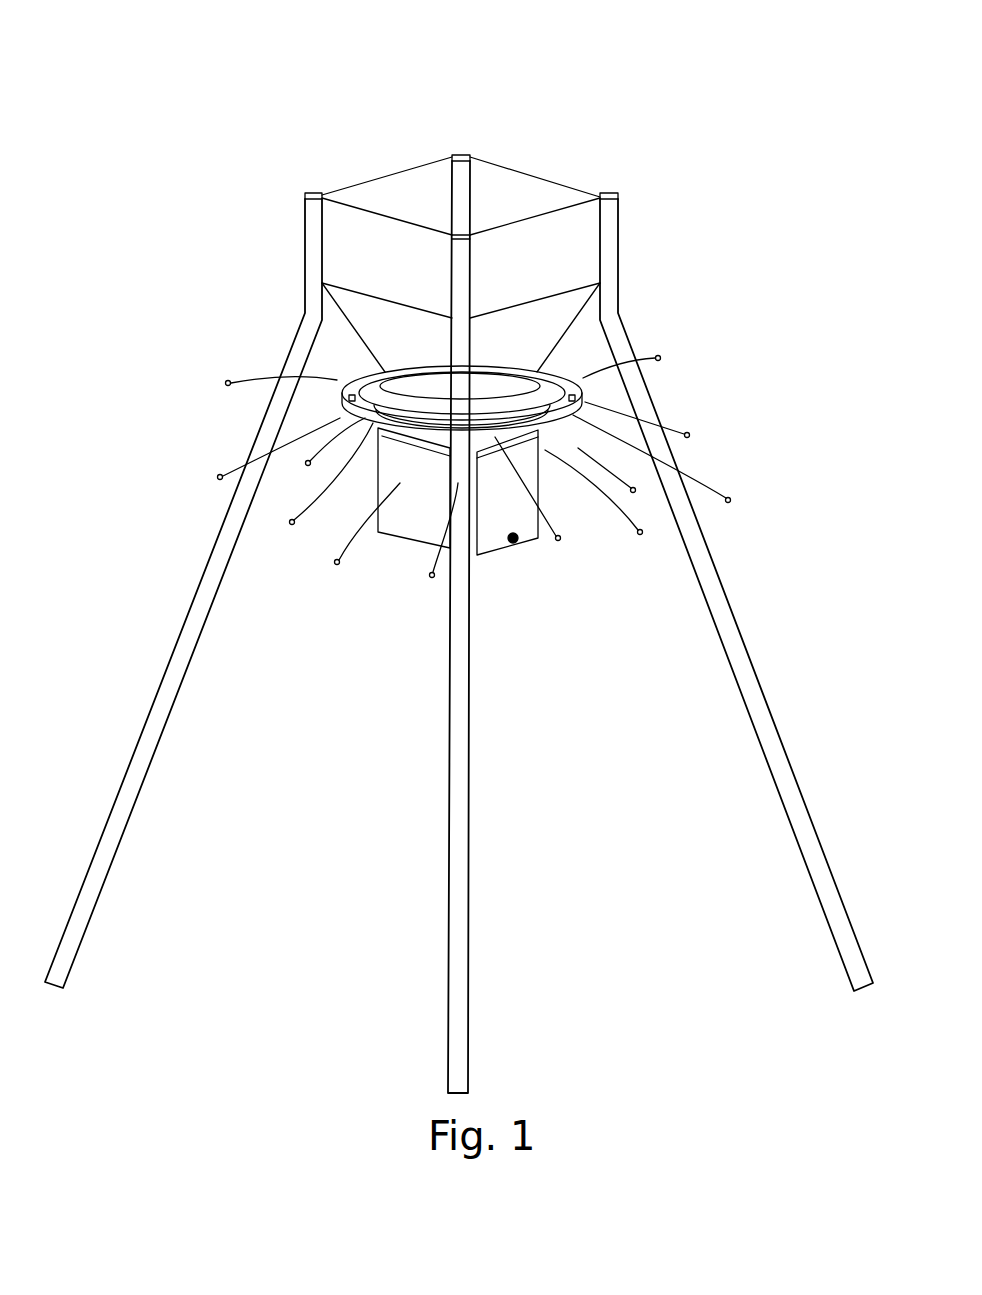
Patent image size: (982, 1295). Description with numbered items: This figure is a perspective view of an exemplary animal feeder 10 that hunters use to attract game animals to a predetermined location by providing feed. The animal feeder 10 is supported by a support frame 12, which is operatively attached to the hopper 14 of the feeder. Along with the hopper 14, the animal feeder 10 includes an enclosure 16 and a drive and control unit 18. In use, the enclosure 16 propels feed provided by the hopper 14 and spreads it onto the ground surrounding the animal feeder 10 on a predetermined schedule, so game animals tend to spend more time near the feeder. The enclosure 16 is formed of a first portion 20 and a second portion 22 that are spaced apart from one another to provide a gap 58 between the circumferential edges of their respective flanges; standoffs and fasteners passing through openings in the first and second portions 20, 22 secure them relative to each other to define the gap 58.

The animal feeder 10 is at (572, 97).
The support frame 12 is at (312, 232).
The hopper 14 is at (573, 247).
The enclosure 16 is at (556, 376).
The drive and control unit 18 is at (418, 522).
The first portion 20 is at (360, 368).
The second portion 22 is at (342, 416).
The gap 58 is at (587, 397).